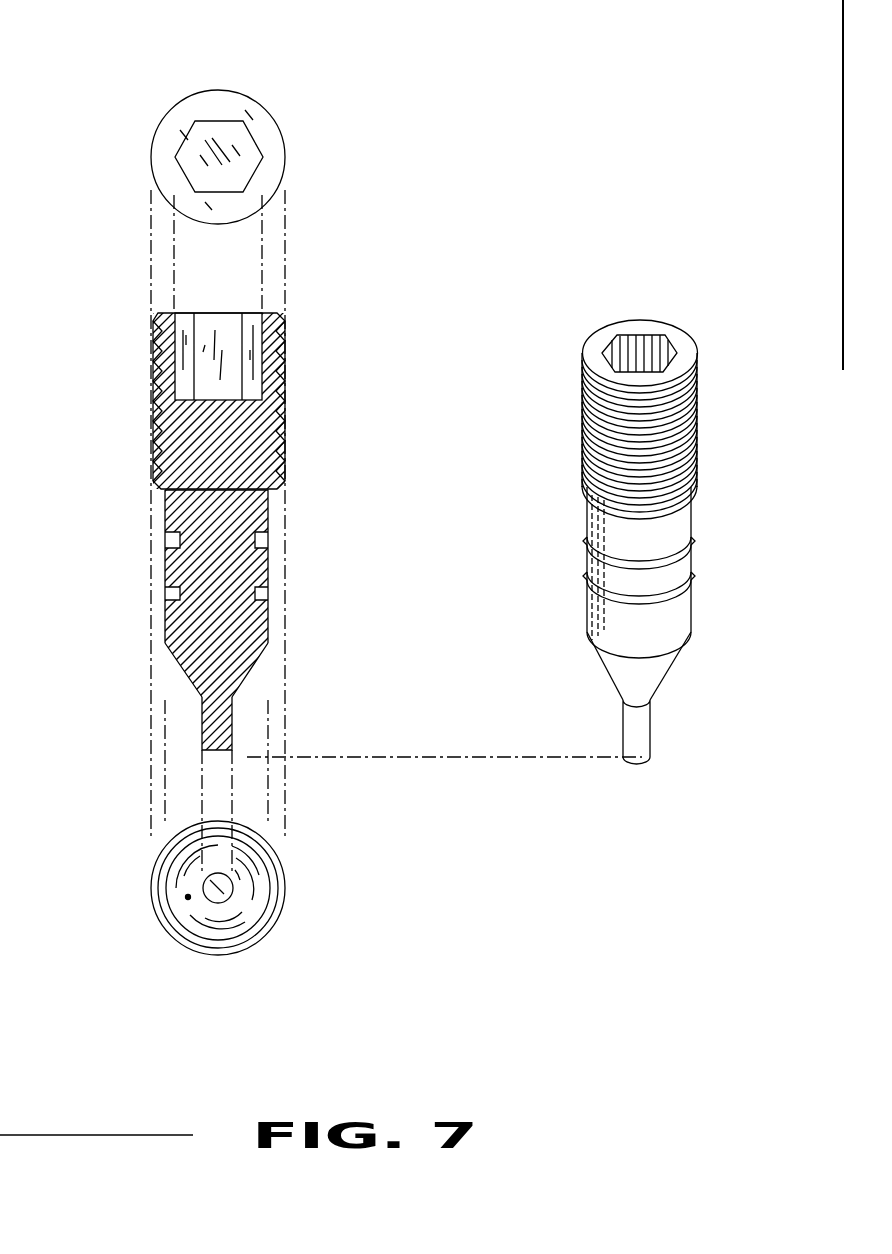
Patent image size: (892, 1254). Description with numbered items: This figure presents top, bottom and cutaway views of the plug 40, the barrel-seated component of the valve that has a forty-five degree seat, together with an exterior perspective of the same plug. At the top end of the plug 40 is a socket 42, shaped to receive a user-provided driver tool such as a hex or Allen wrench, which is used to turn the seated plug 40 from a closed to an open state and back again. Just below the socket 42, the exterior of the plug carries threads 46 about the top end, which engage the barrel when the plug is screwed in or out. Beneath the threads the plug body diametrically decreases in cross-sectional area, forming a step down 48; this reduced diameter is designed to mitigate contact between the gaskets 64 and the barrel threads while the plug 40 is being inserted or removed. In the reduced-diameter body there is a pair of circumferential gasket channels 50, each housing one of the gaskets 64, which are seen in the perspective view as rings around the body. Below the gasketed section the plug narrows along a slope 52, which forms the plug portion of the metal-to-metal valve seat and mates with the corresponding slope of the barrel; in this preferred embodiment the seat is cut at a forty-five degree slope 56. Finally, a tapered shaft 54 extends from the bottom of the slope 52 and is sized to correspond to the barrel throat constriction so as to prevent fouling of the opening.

The plug 40 is at (326, 126).
The top end socket 42 is at (182, 152).
The threads 46 is at (290, 322).
The step down 48 is at (278, 492).
The gasket channels 50 is at (262, 542).
The slope 52 is at (182, 674).
The tapered shaft 54 is at (202, 738).
The 45° slope 56 is at (250, 673).
The gaskets 64 is at (678, 557).